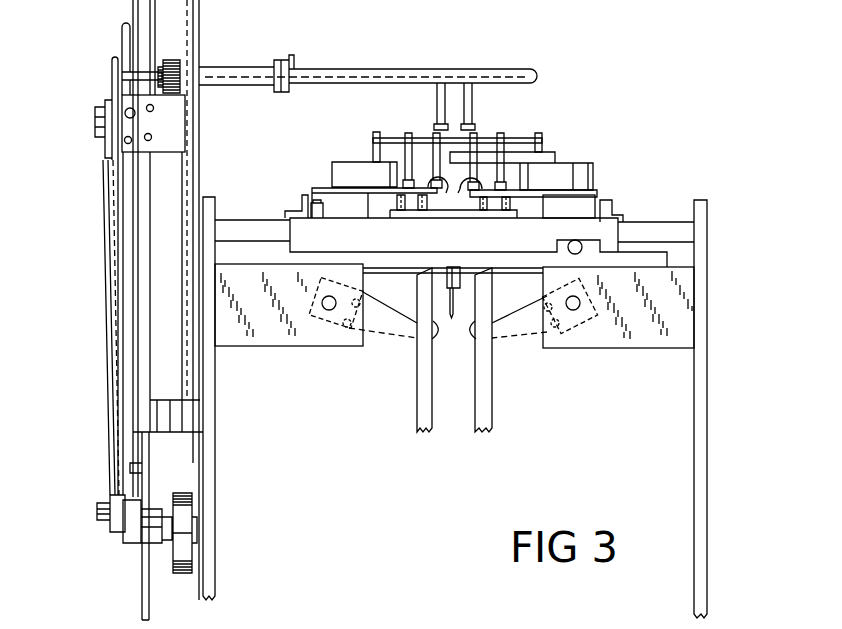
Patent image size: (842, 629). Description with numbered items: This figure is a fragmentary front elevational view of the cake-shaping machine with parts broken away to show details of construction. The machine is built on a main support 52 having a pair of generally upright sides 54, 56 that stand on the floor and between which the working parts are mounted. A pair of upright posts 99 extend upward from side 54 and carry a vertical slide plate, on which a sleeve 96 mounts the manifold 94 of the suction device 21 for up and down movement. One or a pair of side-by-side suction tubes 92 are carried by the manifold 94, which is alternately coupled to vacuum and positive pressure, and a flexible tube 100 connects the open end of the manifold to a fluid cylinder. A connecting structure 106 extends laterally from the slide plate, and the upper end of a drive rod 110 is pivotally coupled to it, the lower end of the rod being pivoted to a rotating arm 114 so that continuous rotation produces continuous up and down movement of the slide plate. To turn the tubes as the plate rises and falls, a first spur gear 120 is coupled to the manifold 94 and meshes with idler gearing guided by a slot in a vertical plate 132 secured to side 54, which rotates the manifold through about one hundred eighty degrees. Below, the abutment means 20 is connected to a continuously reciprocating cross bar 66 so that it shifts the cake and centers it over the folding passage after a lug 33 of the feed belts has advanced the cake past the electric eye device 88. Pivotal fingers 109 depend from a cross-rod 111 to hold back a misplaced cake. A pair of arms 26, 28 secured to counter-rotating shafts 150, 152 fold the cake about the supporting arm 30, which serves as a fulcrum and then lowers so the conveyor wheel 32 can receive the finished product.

The abutment means 20 is at (455, 215).
The suction device 21 is at (381, 58).
The arm 26 is at (394, 345).
The arm 28 is at (517, 348).
The supporting arm 30 is at (461, 280).
The conveyor wheel 32 is at (500, 428).
The lug 33 is at (453, 197).
The main support 52 is at (493, 407).
The side 54 is at (217, 460).
The side 56 is at (708, 337).
The cross bar 66 is at (541, 230).
The electric eye device 88 is at (556, 152).
The suction tube 92 is at (465, 110).
The manifold 94 is at (385, 70).
The sleeve 96 is at (237, 66).
The upright post 99 is at (195, 21).
The flexible tube 100 is at (122, 45).
The connecting structure 106 is at (168, 163).
The pivotal finger 109 is at (433, 147).
The drive rod 110 is at (112, 367).
The cross-rod 111 is at (523, 140).
The rotating arm 114 is at (127, 537).
The first spur gear 120 is at (172, 60).
The vertical plate 132 is at (140, 257).
The shaft 150 is at (330, 312).
The shaft 152 is at (574, 312).